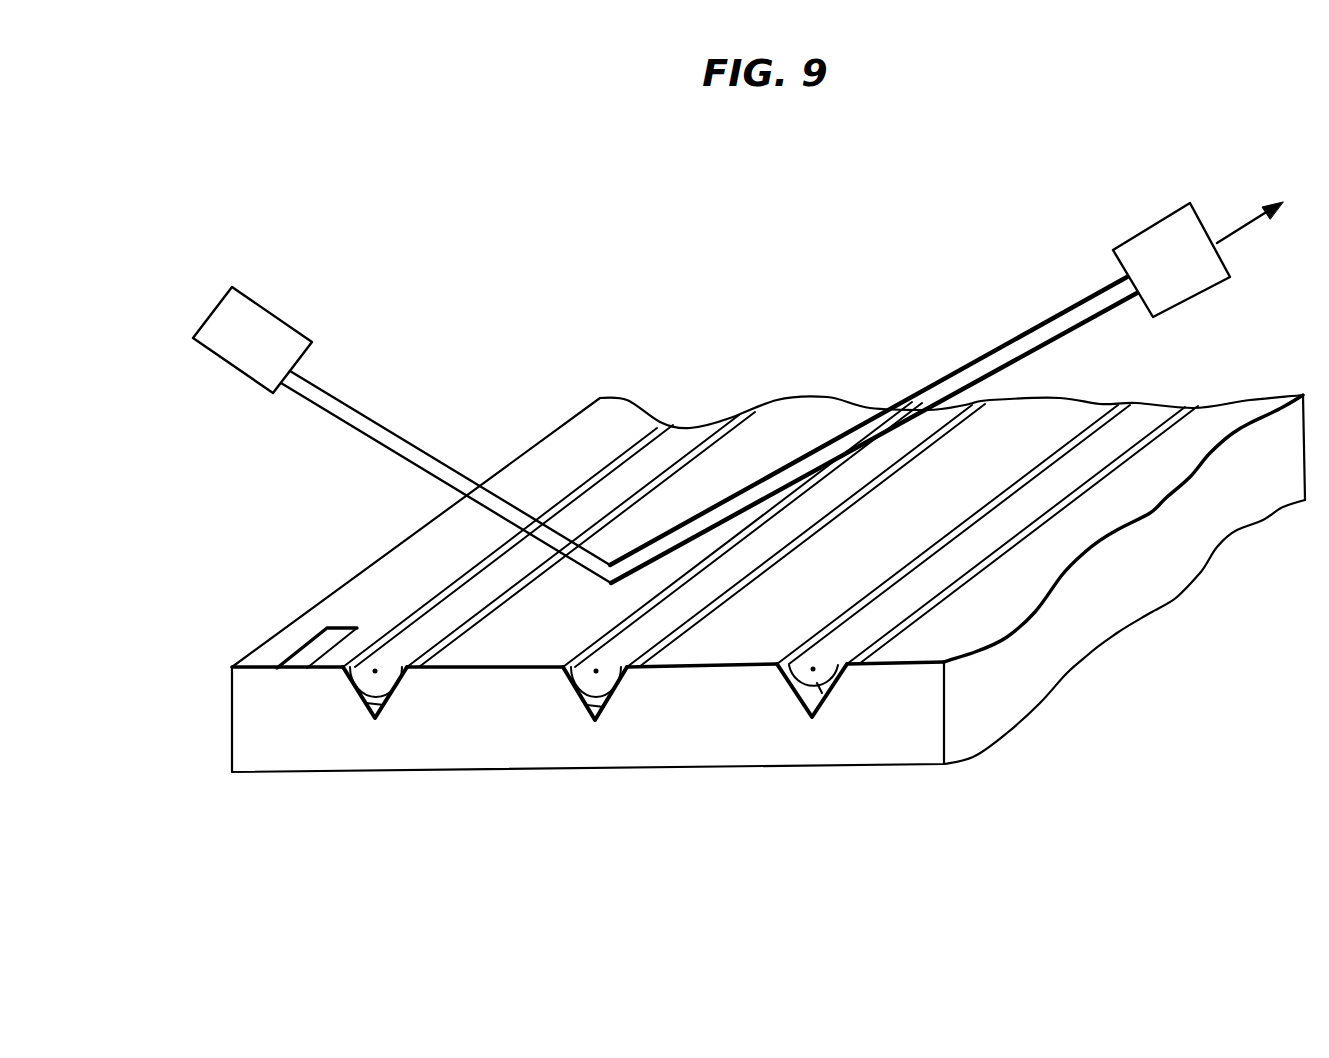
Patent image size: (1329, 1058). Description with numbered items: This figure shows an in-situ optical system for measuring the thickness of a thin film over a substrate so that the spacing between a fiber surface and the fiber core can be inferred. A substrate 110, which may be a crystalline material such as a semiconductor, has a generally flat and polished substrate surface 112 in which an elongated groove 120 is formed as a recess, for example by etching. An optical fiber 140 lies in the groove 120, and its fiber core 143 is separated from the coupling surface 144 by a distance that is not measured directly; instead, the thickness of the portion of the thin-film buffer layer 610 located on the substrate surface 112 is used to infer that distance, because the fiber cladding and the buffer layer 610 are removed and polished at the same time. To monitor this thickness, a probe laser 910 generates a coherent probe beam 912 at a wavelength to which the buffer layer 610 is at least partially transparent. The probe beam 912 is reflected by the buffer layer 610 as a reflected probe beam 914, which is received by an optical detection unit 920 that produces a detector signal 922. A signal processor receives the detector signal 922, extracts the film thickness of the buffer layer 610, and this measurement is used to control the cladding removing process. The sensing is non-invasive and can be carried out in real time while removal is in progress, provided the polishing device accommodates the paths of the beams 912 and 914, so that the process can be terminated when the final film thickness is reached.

The substrate 110 is at (481, 760).
The substrate surface 112 is at (300, 670).
The elongated groove 120 is at (797, 693).
The optical fiber 140 is at (820, 693).
The fiber core 143 is at (847, 666).
The coupling surface 144 is at (700, 590).
The thin-film buffer layer 610 is at (413, 560).
The probe laser 910 is at (265, 352).
The probe beam 912 is at (348, 408).
The reflected probe beam 914 is at (1040, 328).
The optical detection unit 920 is at (1192, 281).
The detector signal 922 is at (1240, 226).